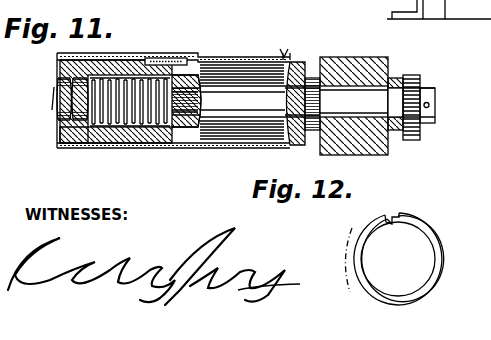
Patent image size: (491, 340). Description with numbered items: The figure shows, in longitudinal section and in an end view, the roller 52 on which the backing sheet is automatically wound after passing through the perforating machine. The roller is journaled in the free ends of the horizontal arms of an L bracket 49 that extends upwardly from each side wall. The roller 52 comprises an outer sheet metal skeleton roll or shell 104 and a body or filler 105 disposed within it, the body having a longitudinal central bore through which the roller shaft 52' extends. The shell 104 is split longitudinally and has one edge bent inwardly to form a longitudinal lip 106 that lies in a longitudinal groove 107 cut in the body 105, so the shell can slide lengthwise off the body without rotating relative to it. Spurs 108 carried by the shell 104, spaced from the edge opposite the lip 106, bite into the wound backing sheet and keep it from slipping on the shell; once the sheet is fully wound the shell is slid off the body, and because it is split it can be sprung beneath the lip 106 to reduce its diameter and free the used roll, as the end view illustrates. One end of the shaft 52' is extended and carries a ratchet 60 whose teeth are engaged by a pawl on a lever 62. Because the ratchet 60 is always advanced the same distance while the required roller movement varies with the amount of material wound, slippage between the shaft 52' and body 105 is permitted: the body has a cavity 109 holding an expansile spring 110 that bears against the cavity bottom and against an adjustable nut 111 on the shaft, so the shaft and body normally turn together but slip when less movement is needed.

In FIG. 11, the L bracket 49 is at (366, 56).
In FIG. 11, the roller 52 is at (180, 142).
In FIG. 11, the roller shaft 52' is at (315, 101).
In FIG. 11, the ratchet 60 is at (418, 75).
In FIG. 11, the lever 62 is at (396, 132).
In FIG. 11, the shell 104 is at (232, 144).
In FIG. 12, the shell 104 is at (364, 280).
In FIG. 11, the body 105 is at (81, 138).
In FIG. 11, the longitudinal lip 106 is at (72, 61).
In FIG. 12, the longitudinal lip 106 is at (396, 243).
In FIG. 11, the longitudinal groove 107 is at (163, 59).
In FIG. 11, the spurs 108 is at (285, 56).
In FIG. 12, the spurs 108 is at (392, 210).
In FIG. 11, the cavity 109 is at (150, 128).
In FIG. 11, the expansile spring 110 is at (119, 139).
In FIG. 11, the adjustable nut 111 is at (80, 100).